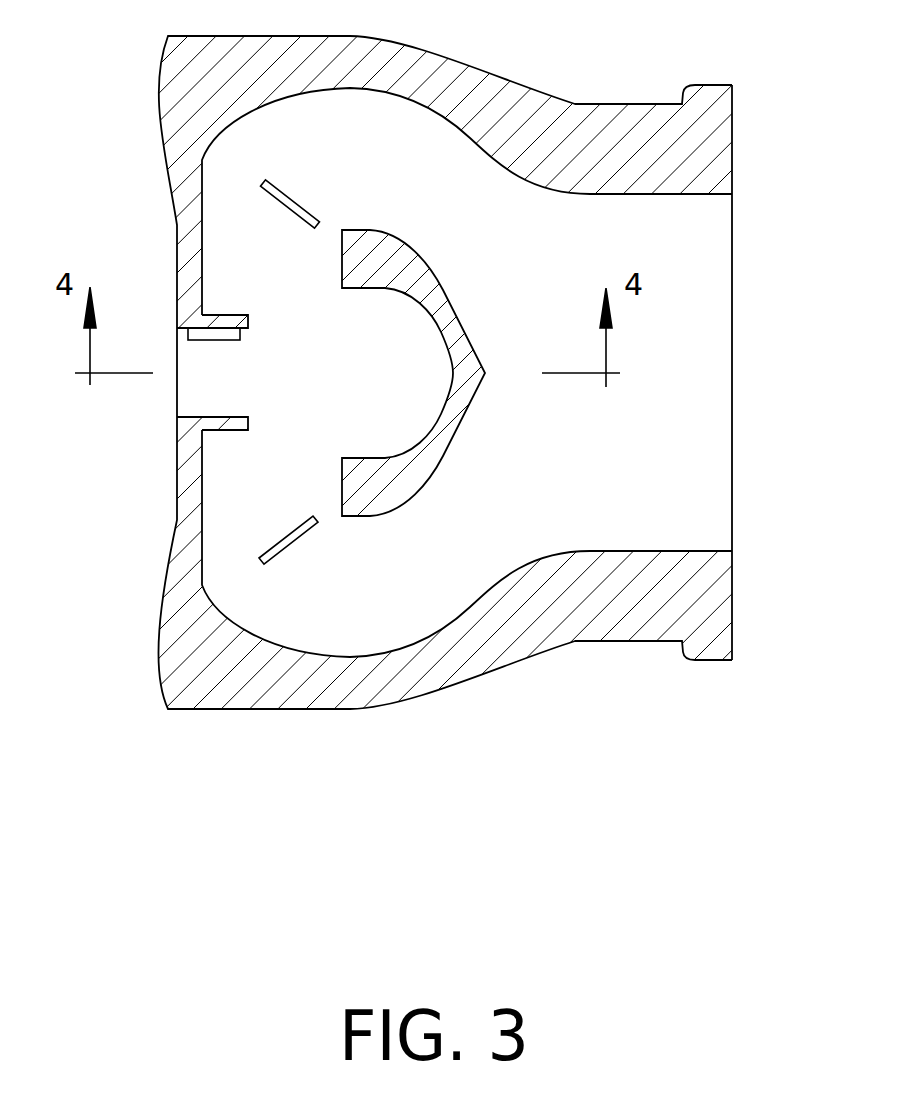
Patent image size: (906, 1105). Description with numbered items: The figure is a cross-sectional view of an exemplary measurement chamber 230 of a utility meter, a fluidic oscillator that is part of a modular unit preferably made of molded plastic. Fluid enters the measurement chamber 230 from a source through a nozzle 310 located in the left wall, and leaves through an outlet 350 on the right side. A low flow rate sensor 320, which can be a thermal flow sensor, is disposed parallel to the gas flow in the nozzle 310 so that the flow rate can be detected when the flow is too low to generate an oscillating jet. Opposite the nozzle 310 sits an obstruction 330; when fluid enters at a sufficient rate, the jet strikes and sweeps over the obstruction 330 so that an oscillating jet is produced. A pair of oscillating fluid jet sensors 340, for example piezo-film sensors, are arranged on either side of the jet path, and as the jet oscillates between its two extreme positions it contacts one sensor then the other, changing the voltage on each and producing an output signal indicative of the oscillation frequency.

The measurement chamber 230 is at (590, 127).
The nozzle 310 is at (222, 415).
The low flow rate sensor 320 is at (222, 342).
The obstruction 330 is at (432, 288).
The oscillating fluid jet sensors 340 is at (292, 200).
The outlet 350 is at (715, 316).